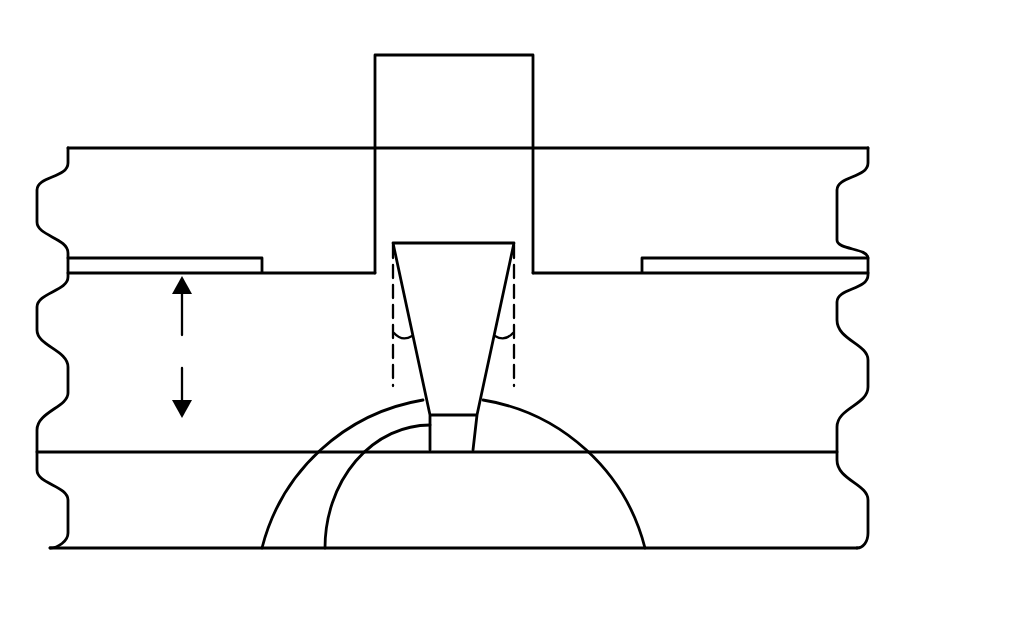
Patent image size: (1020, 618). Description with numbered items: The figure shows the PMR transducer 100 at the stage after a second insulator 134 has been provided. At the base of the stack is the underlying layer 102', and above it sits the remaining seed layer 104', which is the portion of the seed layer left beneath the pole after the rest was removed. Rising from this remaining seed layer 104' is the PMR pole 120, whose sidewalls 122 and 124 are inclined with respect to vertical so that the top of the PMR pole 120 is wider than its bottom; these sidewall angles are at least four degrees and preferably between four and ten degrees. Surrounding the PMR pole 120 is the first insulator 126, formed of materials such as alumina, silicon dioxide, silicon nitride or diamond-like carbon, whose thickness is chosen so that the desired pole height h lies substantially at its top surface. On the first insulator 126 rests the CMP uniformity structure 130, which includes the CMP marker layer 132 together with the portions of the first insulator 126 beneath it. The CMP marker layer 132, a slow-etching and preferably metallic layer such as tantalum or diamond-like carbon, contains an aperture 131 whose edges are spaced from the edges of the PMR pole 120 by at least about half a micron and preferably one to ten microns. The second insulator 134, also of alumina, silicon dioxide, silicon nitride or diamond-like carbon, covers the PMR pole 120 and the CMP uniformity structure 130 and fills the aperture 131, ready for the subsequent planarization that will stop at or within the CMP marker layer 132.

The PMR transducer 100 is at (123, 43).
The underlying layer 102' is at (447, 517).
The remaining seed layer 104' is at (366, 505).
The PMR pole 120 is at (437, 231).
The sidewall 122 is at (331, 492).
The sidewall 124 is at (573, 491).
The first insulator 126 is at (500, 147).
The CMP uniformity structure 130 is at (260, 102).
The aperture 131 is at (645, 52).
The CMP marker layer 132 is at (143, 257).
The second insulator 134 is at (292, 147).